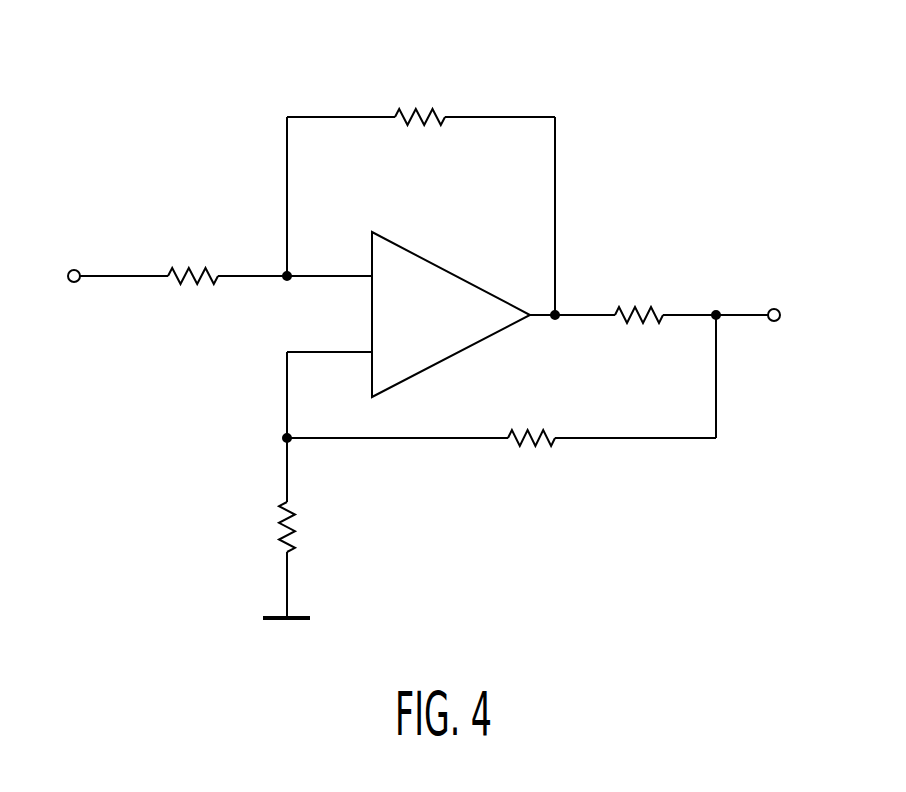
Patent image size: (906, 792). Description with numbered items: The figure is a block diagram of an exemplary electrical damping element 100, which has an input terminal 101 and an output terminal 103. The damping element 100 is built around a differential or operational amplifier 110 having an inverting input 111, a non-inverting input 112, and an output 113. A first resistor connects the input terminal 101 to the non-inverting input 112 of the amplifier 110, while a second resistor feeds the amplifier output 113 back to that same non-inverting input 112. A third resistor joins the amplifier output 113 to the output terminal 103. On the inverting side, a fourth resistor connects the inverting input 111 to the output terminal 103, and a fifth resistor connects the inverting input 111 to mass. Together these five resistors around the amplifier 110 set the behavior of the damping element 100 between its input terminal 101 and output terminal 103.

The electrical damping element 100 is at (160, 134).
The input terminal 101 is at (74, 270).
The output terminal 103 is at (777, 308).
The operational amplifier 110 is at (451, 289).
The inverting input 111 is at (349, 351).
The non-inverting input 112 is at (349, 278).
The output 113 is at (535, 314).